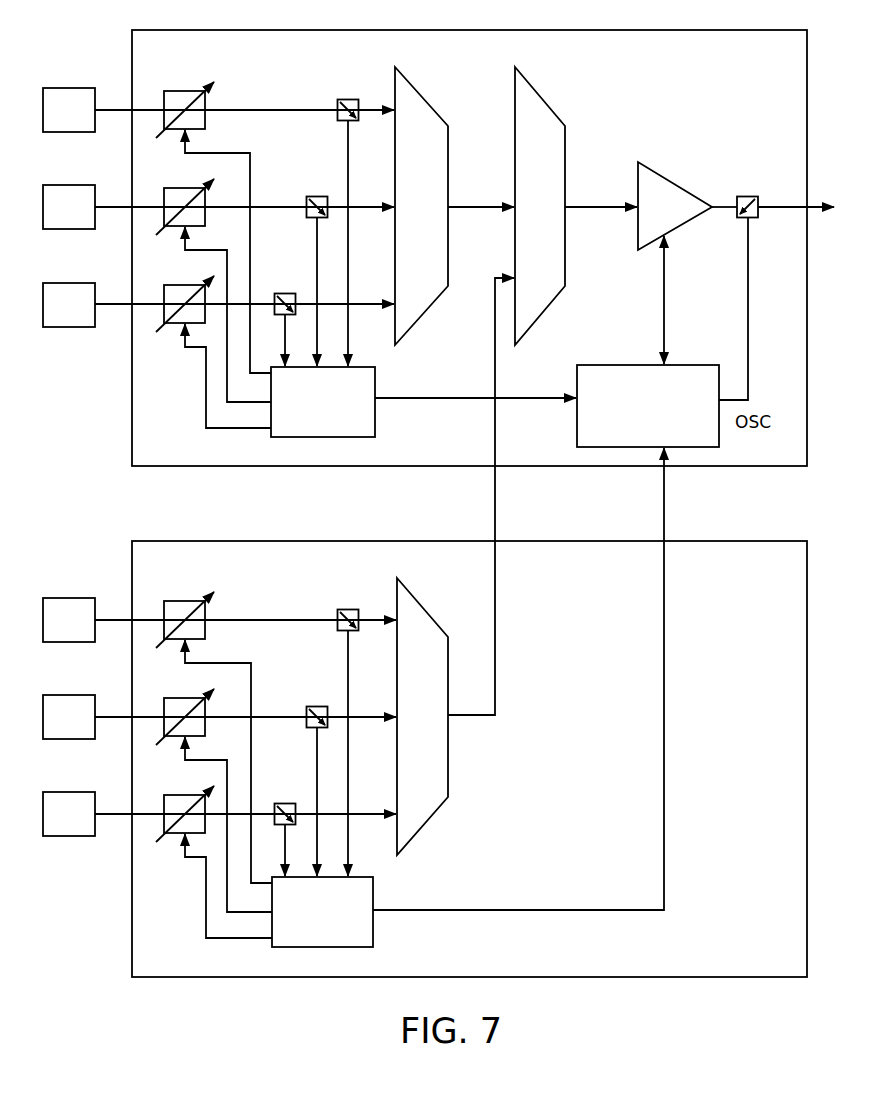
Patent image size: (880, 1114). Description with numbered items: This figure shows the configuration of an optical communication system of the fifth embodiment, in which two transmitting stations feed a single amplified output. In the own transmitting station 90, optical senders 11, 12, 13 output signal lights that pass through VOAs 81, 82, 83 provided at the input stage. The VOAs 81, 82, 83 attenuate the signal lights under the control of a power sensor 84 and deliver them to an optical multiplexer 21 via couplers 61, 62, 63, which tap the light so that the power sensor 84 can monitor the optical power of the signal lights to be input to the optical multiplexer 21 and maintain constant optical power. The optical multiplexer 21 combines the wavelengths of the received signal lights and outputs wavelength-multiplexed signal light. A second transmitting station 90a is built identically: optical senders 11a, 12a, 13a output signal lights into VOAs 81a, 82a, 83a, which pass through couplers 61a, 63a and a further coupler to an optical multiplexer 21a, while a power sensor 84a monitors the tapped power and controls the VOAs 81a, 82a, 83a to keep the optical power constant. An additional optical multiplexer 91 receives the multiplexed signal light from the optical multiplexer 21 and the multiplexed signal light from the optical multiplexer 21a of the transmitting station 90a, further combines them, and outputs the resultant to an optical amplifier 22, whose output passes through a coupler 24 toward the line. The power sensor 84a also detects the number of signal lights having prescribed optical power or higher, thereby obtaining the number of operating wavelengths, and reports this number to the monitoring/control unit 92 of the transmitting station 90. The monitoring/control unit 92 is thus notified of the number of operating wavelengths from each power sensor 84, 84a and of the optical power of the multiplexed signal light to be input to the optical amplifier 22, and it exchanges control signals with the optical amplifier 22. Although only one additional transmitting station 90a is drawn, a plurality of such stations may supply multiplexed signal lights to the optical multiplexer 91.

The transmitting station 90 is at (270, 30).
The transmitting station 90a is at (270, 541).
The optical sender 11 is at (58, 88).
The optical sender 12 is at (58, 185).
The optical sender 13 is at (58, 283).
The optical sender 11a is at (58, 598).
The optical sender 12a is at (58, 695).
The optical sender 13a is at (58, 792).
The VOA 81 is at (183, 91).
The VOA 82 is at (192, 188).
The VOA 83 is at (176, 330).
The VOA 81a is at (183, 601).
The VOA 82a is at (192, 698).
The VOA 83a is at (176, 840).
The coupler 61 is at (348, 99).
The coupler 62 is at (317, 196).
The coupler 63 is at (285, 293).
The coupler 61a is at (348, 609).
The coupler 63a is at (285, 803).
The optical multiplexer 21 is at (418, 95).
The optical multiplexer 21a is at (420, 606).
The optical multiplexer 91 is at (537, 95).
The optical amplifier 22 is at (668, 180).
The coupler 24 is at (748, 196).
The power sensor 84 is at (375, 392).
The power sensor 84a is at (373, 893).
The monitoring/control unit 92 is at (705, 365).